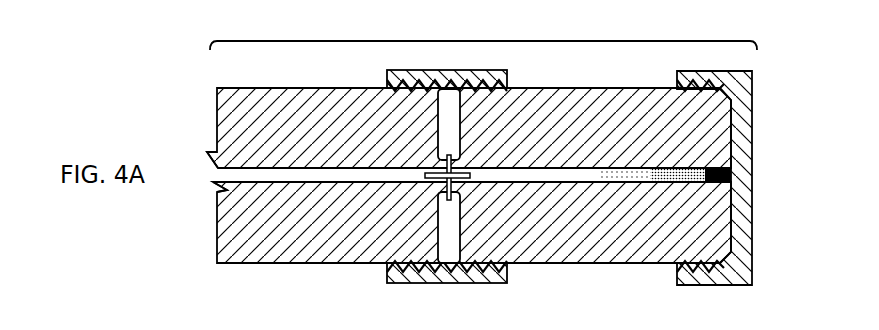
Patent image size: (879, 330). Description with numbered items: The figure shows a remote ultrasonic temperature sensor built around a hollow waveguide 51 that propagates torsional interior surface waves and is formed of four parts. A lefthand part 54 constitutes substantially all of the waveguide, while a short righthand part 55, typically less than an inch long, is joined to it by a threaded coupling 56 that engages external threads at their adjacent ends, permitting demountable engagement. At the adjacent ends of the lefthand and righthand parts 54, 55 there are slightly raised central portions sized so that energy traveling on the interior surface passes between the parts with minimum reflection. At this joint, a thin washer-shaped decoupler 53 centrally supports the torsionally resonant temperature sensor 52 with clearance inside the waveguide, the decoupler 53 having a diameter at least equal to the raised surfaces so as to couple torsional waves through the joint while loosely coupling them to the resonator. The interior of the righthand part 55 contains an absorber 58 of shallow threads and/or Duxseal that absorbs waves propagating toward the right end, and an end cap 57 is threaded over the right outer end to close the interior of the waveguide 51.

The hollow waveguide 51 is at (485, 41).
The resonant temperature sensor 52 is at (425, 176).
The decoupler 53 is at (451, 198).
The lefthand part 54 is at (217, 112).
The righthand part 55 is at (584, 88).
The coupling 56 is at (508, 73).
The end cap 57 is at (752, 182).
The absorber 58 is at (622, 183).